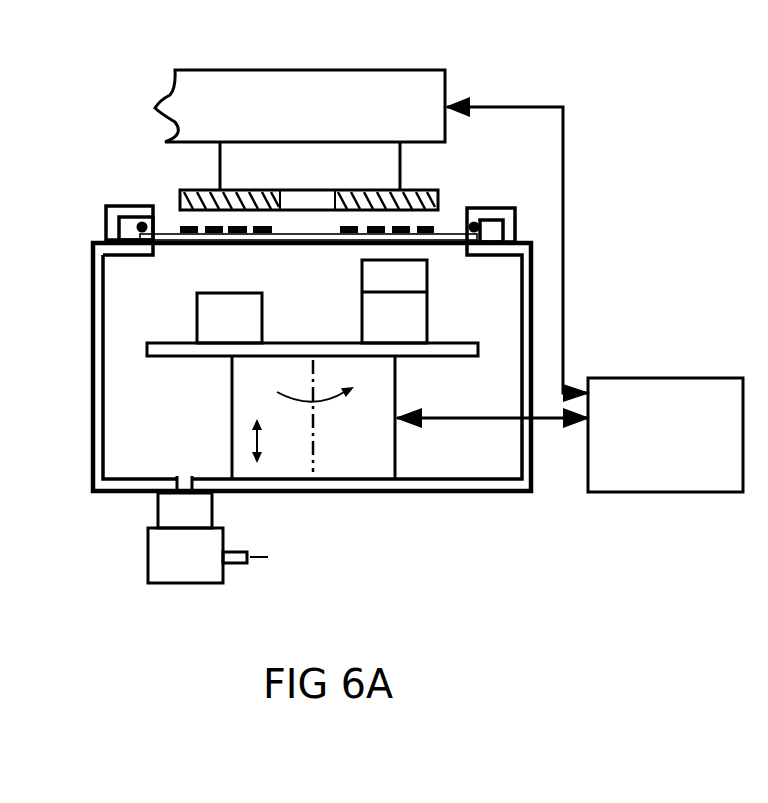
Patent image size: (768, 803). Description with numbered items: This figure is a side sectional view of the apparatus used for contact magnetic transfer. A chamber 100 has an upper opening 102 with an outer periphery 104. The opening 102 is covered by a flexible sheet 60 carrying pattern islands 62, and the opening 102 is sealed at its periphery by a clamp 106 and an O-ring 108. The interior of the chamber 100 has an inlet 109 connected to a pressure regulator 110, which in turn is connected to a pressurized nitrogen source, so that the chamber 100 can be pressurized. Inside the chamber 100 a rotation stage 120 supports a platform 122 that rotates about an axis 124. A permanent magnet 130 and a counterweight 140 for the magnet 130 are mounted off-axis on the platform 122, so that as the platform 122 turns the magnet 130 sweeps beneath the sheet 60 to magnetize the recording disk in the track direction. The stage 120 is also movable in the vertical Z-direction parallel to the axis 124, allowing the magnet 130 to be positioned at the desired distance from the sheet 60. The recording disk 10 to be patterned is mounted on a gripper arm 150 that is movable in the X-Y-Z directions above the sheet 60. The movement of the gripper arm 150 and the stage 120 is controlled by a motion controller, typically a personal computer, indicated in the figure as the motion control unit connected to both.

The gripper arm 150 is at (317, 68).
The flexible sheet 60 is at (172, 230).
The recording disk 10 is at (437, 198).
The pattern islands 62 is at (433, 230).
The outer periphery 104 is at (160, 247).
The clamp 106 is at (110, 207).
The O-ring 108 is at (478, 226).
The chamber 100 is at (97, 442).
The upper opening 102 is at (173, 258).
The inlet 109 is at (185, 477).
The pressure regulator 110 is at (173, 570).
The platform 122 is at (195, 356).
The rotation stage 120 is at (247, 384).
The axis 124 is at (312, 440).
The permanent magnet 130 is at (418, 305).
The counterweight 140 is at (257, 298).